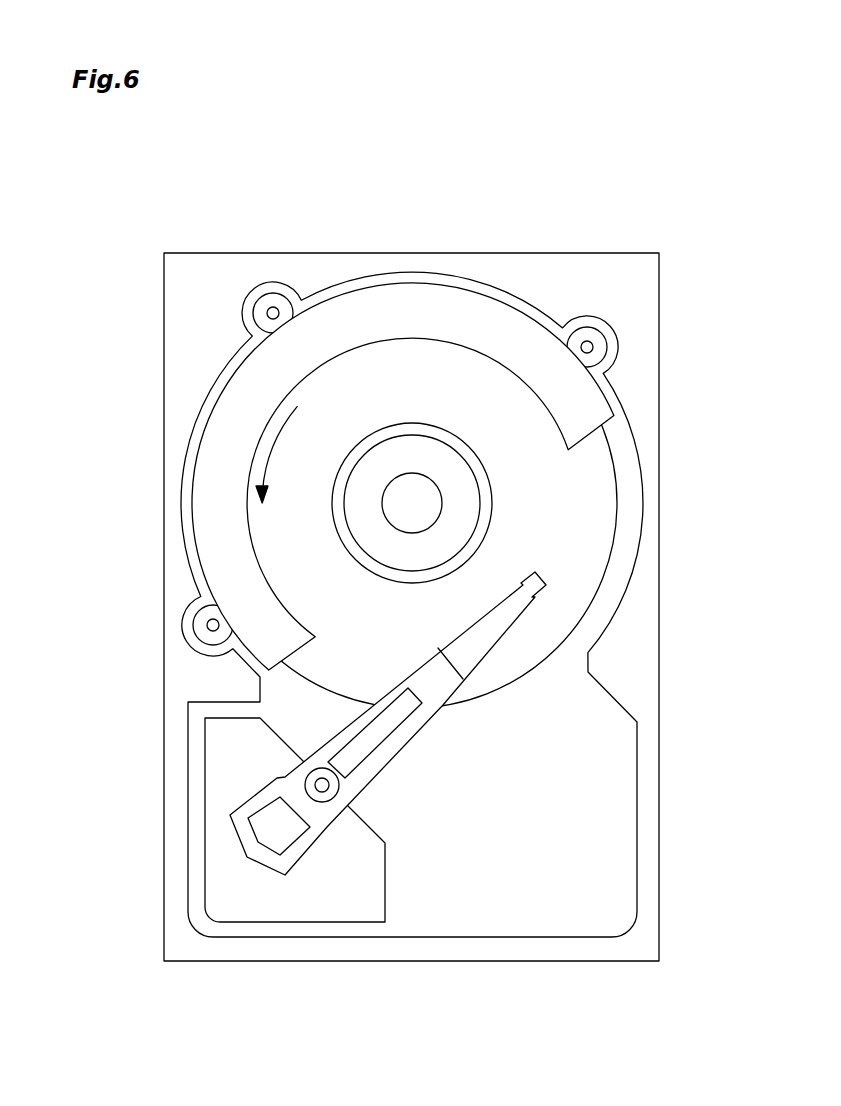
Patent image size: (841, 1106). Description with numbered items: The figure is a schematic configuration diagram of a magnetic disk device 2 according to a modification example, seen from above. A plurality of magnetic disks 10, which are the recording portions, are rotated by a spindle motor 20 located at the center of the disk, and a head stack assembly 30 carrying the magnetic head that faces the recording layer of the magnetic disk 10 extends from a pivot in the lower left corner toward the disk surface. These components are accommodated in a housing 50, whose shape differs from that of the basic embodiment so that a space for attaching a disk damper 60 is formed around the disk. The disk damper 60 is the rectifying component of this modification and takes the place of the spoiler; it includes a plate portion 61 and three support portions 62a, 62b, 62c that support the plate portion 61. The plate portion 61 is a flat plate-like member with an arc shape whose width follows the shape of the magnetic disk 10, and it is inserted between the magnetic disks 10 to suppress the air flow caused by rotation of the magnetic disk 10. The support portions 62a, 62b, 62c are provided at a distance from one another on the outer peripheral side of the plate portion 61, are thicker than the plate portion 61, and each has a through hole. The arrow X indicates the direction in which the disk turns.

The magnetic disk device 2 is at (236, 190).
The magnetic disk 10 is at (597, 468).
The spindle motor 20 is at (422, 510).
The head stack assembly 30 is at (397, 751).
The housing 50 is at (628, 283).
The disk damper 60 is at (448, 296).
The plate portion 61 is at (508, 322).
The support portion 62a is at (598, 362).
The support portion 62b is at (285, 305).
The support portion 62c is at (203, 607).
The disk rotation direction X is at (275, 443).